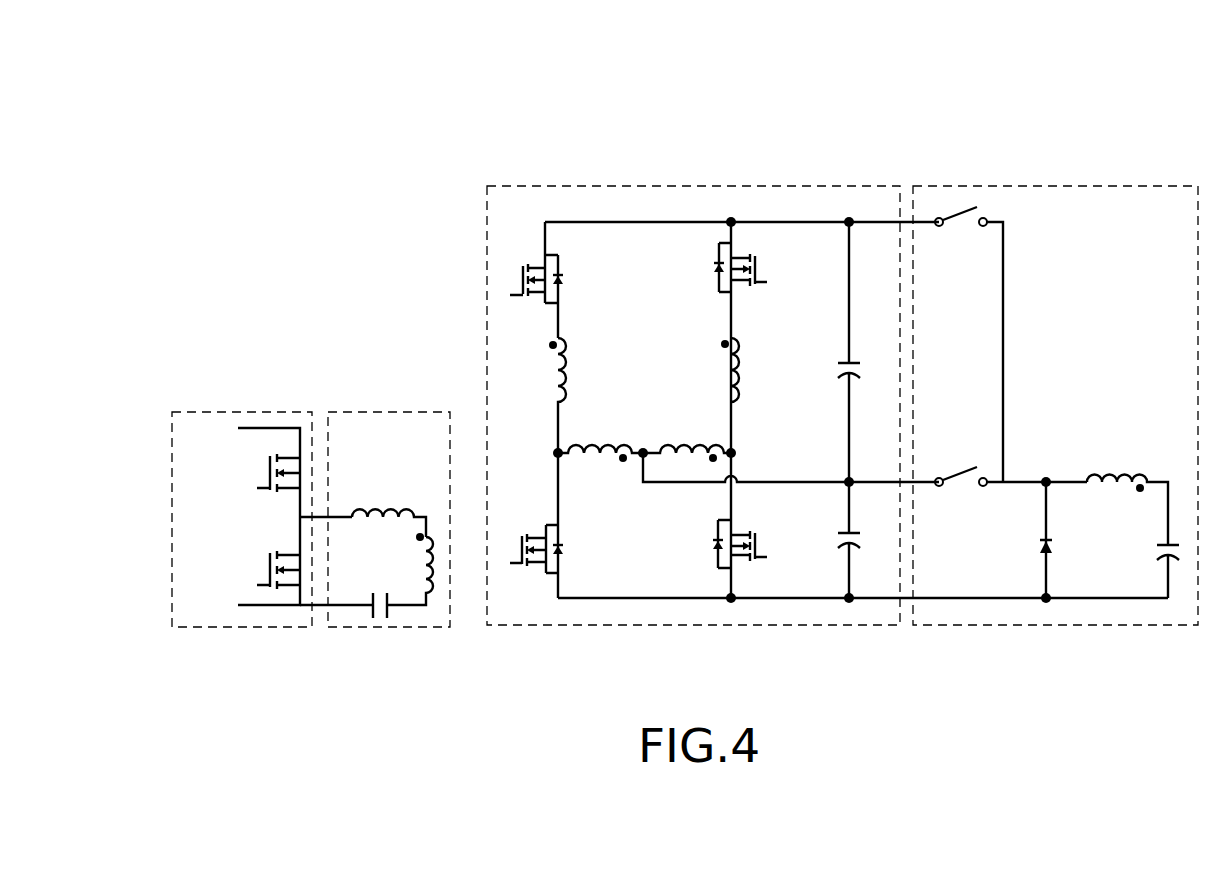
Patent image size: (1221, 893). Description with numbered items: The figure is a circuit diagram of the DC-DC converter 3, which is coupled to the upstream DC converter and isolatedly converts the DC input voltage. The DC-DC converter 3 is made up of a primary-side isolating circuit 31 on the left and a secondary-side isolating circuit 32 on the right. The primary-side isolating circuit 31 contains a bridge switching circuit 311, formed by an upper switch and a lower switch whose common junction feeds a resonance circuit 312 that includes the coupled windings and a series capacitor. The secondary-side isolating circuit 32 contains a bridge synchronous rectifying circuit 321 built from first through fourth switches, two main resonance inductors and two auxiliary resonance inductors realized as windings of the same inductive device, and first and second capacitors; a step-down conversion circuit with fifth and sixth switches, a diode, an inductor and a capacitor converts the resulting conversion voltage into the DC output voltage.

The DC-DC converter 3 is at (551, 58).
The primary-side isolating circuit 31 is at (365, 314).
The bridge switching circuit 311 is at (203, 420).
The resonance circuit 312 is at (388, 420).
The secondary-side isolating circuit 32 is at (1032, 98).
The bridge synchronous rectifying circuit 321 is at (763, 197).